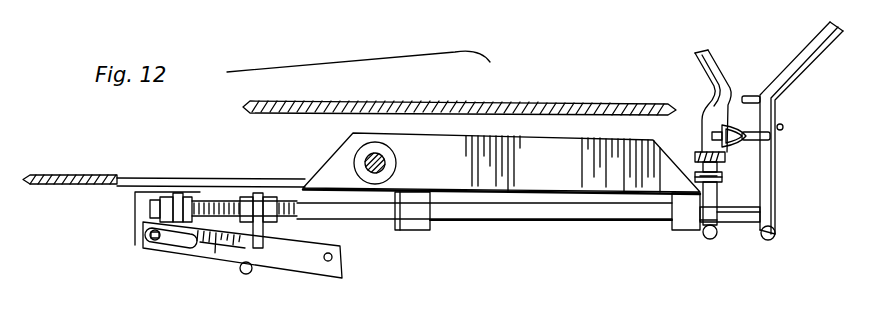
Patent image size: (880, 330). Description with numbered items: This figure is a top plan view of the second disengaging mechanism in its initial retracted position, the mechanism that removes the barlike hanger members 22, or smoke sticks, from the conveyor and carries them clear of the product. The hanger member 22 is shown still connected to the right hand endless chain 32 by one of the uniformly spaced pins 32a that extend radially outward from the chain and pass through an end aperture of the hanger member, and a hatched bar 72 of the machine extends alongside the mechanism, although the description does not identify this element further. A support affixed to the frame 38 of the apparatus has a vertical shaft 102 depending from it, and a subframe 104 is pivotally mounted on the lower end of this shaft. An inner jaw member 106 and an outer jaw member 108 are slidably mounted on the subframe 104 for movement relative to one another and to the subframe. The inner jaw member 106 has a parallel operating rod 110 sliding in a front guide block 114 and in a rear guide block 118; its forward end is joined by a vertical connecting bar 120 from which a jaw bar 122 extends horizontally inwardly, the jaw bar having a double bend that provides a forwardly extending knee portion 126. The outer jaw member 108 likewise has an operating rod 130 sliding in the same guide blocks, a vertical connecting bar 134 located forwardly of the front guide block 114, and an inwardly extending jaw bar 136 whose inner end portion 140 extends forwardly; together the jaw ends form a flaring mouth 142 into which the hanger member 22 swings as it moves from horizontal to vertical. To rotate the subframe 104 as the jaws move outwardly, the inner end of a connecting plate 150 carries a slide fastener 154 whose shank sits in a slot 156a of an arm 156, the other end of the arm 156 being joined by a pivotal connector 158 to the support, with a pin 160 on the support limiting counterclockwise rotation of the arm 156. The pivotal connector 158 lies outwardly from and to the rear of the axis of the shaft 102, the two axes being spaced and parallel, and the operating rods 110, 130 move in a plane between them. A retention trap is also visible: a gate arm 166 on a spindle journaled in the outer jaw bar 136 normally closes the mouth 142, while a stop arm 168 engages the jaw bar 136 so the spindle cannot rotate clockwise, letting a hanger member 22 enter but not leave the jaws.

The hanger member 22 is at (738, 138).
The endless chain 32 is at (697, 153).
The pin 32a is at (757, 130).
The frame 38 is at (93, 174).
The guide rail 72 is at (558, 70).
The vertical shaft 102 is at (365, 160).
The subframe 104 is at (583, 143).
The inner jaw member 106 is at (723, 218).
The outer jaw member 108 is at (788, 216).
The operating rod 110 is at (213, 200).
The front guide block 114 is at (673, 228).
The rear guide block 118 is at (416, 219).
The vertical connecting bar 120 is at (710, 243).
The jaw bar 122 is at (718, 192).
The knee portion 126 is at (710, 112).
The operating rod 130 is at (360, 214).
The vertical connecting bar 134 is at (768, 242).
The jaw bar 136 is at (745, 208).
The inner end portion 140 is at (809, 62).
The flaring mouth 142 is at (738, 67).
The connecting plate 150 is at (176, 193).
The slide fastener 154 is at (149, 240).
The arm 156 is at (225, 258).
The slot 156a is at (190, 242).
The pivotal connector 158 is at (340, 272).
The pin 160 is at (249, 274).
The gate arm 166 is at (750, 96).
The stop arm 168 is at (784, 129).